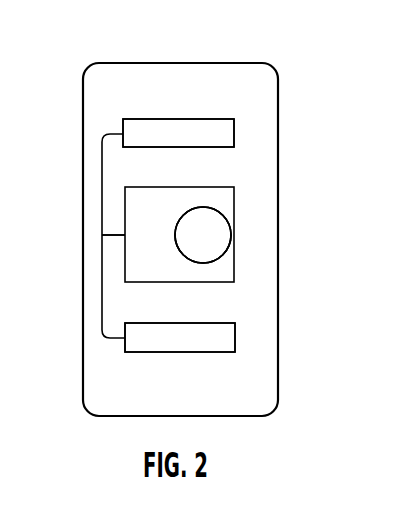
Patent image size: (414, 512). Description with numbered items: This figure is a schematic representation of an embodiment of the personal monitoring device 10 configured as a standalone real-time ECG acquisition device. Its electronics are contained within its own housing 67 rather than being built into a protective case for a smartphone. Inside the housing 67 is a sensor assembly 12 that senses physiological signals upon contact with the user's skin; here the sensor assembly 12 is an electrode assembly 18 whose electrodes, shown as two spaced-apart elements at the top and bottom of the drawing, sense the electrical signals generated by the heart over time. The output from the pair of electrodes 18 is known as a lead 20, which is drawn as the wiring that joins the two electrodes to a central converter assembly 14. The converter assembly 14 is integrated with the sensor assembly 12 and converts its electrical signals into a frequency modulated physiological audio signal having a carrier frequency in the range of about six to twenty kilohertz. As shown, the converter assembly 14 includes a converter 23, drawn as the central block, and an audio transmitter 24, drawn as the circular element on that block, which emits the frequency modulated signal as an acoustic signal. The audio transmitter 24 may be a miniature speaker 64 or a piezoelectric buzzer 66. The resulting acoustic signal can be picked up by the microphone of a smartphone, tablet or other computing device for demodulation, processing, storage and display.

The personal monitoring device 10 is at (298, 68).
The sensor assembly 12 is at (220, 132).
The electrode assembly 18 is at (179, 235).
The converter assembly 14 is at (125, 270).
The lead 20 is at (113, 237).
The converter 23 is at (222, 269).
The audio transmitter 24 is at (191, 211).
The miniature speaker 64 is at (227, 215).
The piezoelectric buzzer 66 is at (203, 235).
The housing 67 is at (278, 402).